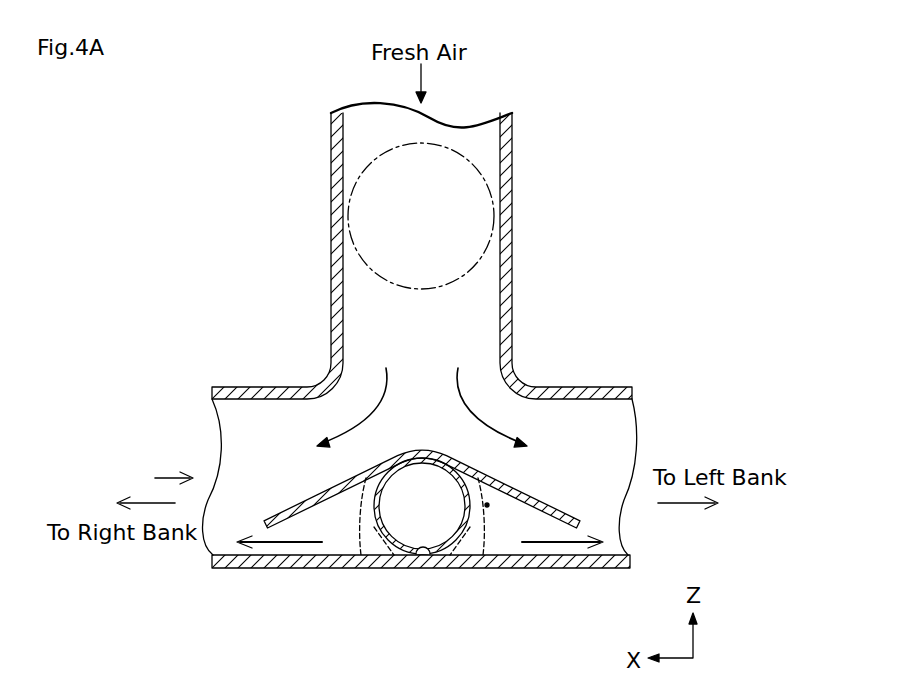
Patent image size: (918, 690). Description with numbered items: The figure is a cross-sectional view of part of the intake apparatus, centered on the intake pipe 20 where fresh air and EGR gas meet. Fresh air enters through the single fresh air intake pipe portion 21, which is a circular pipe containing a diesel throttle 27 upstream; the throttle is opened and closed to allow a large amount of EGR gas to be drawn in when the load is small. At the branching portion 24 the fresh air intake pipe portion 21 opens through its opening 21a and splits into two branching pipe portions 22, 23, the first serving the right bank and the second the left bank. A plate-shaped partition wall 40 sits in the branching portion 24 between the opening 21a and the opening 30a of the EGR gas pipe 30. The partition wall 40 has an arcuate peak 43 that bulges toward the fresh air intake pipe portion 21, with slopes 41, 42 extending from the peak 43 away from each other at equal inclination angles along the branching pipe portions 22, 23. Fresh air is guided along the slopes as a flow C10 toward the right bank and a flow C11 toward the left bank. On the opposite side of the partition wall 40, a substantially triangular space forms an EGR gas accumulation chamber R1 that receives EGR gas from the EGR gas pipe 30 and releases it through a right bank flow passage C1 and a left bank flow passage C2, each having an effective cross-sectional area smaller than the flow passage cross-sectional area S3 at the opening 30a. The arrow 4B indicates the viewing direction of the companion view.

The intake pipe 20 is at (512, 137).
The fresh air intake pipe portion 21 is at (512, 215).
The opening of the fresh air intake pipe portion 21a is at (487, 388).
The branching pipe portion 22 is at (240, 386).
The branching pipe portion 23 is at (598, 386).
The branching portion 24 is at (323, 381).
The diesel throttle 27 is at (447, 143).
The EGR gas pipe 30 is at (432, 536).
The opening of the EGR gas pipe 30a is at (423, 557).
The partition wall 40 is at (422, 469).
The slope 41 is at (287, 510).
The slope 42 is at (564, 512).
The peak 43 is at (426, 451).
The EGR gas accumulation chamber R1 is at (488, 504).
The flow passage cross-sectional area S3 is at (368, 530).
The right bank flow passage C1 is at (294, 541).
The left bank flow passage C2 is at (548, 541).
The flow C10 is at (386, 368).
The flow C11 is at (458, 368).
The viewing direction of Fig. 4B is at (156, 482).